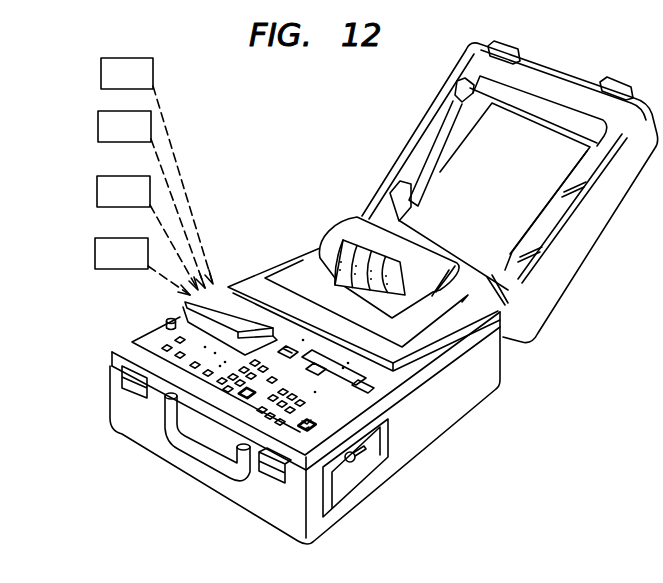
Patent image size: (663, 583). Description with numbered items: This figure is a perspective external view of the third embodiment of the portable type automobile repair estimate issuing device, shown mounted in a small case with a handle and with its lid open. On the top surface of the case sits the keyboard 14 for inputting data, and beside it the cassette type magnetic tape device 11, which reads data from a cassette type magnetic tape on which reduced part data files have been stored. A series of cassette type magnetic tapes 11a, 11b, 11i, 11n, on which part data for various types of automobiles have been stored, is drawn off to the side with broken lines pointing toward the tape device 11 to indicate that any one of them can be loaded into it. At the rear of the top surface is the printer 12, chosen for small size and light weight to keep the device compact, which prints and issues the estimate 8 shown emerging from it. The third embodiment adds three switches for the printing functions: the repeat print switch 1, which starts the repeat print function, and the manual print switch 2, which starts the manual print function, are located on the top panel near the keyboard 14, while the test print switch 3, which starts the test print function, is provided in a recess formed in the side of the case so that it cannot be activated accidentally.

The repeat print switch 1 is at (382, 367).
The manual print switch 2 is at (372, 380).
The test print switch 3 is at (390, 454).
The estimate 8 is at (345, 220).
The cassette type magnetic tape device 11 is at (185, 303).
The cassette type magnetic tape 11a is at (105, 57).
The cassette type magnetic tape 11b is at (98, 118).
The cassette type magnetic tape 11i is at (97, 182).
The cassette type magnetic tape 11n is at (95, 247).
The printer 12 is at (300, 270).
The keyboard 14 is at (280, 432).